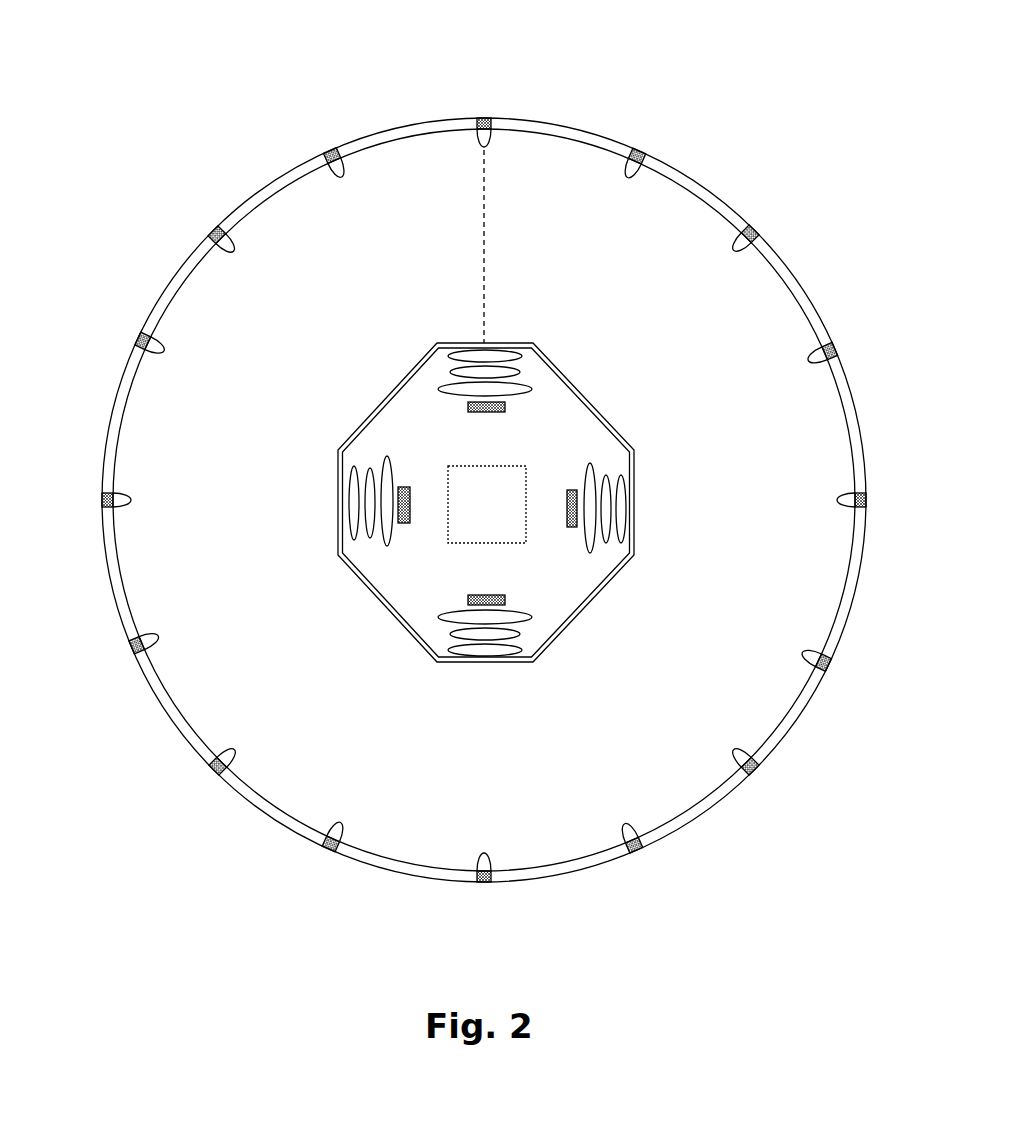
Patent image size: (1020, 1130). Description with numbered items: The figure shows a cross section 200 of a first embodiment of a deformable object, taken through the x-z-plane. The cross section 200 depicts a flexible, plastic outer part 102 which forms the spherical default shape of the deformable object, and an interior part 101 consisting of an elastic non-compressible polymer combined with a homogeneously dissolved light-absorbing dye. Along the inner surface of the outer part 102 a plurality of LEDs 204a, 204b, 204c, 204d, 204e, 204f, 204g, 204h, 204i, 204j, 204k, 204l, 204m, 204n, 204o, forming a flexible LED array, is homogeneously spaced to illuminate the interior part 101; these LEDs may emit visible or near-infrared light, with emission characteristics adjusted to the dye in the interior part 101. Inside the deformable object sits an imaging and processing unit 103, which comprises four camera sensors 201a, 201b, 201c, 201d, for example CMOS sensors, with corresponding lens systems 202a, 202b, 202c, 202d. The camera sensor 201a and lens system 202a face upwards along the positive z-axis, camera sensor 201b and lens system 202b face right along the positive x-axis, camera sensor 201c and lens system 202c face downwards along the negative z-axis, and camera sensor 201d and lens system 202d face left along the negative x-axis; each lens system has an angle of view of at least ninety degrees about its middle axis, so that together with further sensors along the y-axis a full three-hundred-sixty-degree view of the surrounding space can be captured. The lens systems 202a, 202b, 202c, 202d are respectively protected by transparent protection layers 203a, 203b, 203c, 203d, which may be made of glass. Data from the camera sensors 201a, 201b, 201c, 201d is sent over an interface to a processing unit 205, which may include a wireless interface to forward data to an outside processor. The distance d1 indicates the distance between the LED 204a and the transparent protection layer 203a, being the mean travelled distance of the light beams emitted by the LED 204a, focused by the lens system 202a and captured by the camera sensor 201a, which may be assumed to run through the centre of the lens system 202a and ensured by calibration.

The cross section 200 is at (495, 50).
The interior part 101 is at (484, 482).
The outer part 102 is at (478, 503).
The imaging and processing unit 103 is at (475, 507).
The camera sensor 201a is at (469, 412).
The camera sensor 201b is at (571, 490).
The camera sensor 201c is at (496, 595).
The camera sensor 201d is at (403, 523).
The lens system 202a is at (461, 378).
The lens system 202b is at (614, 509).
The lens system 202c is at (486, 638).
The lens system 202d is at (369, 509).
The transparent protection layer 203a is at (472, 356).
The transparent protection layer 203b is at (650, 508).
The transparent protection layer 203c is at (484, 654).
The transparent protection layer 203d is at (335, 501).
The LED 204a is at (518, 120).
The LED 204b is at (670, 154).
The LED 204c is at (779, 233).
The LED 204d is at (857, 344).
The LED 204e is at (868, 570).
The LED 204f is at (778, 761).
The LED 204g is at (664, 849).
The LED 204h is at (519, 882).
The LED 204i is at (305, 850).
The LED 204j is at (184, 769).
The LED 204k is at (100, 652).
The LED 204l is at (74, 507).
The LED 204m is at (103, 344).
The LED 204n is at (182, 237).
The LED 204o is at (299, 152).
The processing unit 205 is at (487, 504).
The distance d1 is at (495, 241).